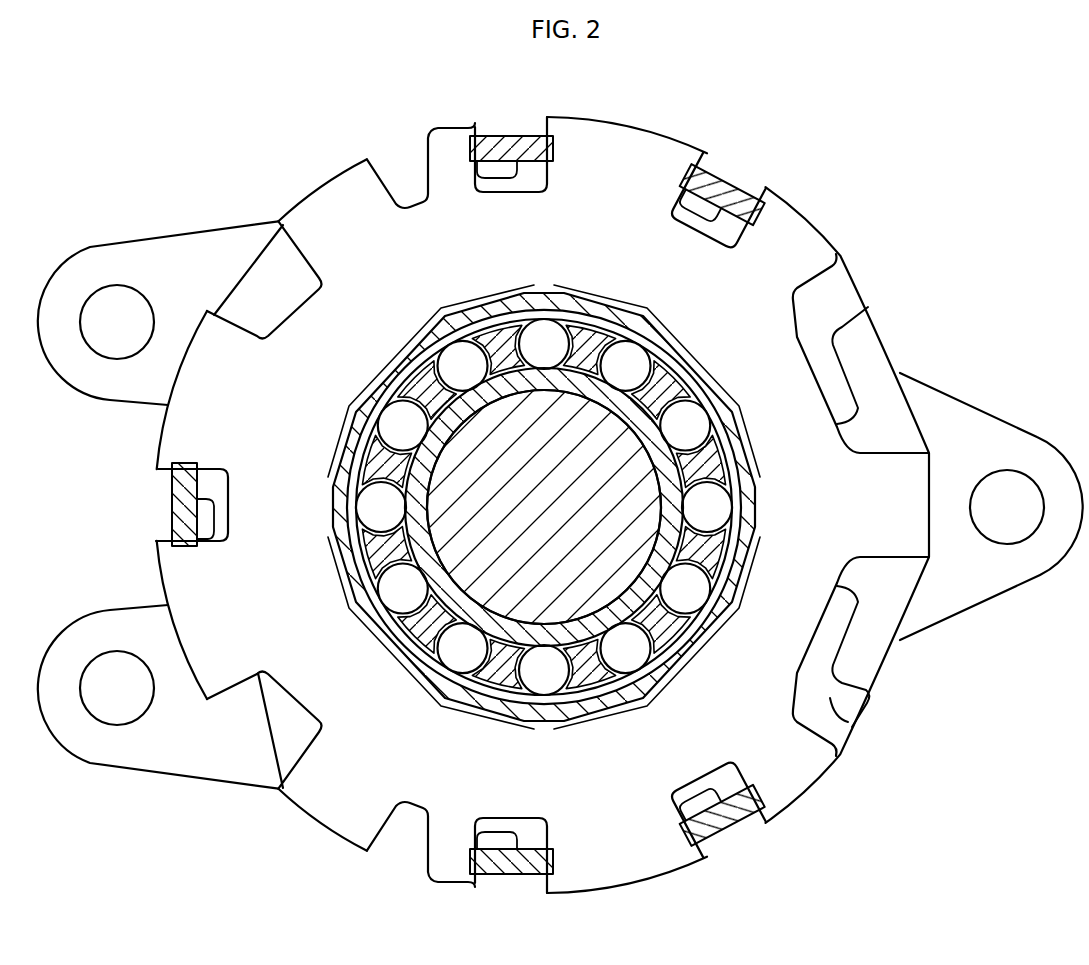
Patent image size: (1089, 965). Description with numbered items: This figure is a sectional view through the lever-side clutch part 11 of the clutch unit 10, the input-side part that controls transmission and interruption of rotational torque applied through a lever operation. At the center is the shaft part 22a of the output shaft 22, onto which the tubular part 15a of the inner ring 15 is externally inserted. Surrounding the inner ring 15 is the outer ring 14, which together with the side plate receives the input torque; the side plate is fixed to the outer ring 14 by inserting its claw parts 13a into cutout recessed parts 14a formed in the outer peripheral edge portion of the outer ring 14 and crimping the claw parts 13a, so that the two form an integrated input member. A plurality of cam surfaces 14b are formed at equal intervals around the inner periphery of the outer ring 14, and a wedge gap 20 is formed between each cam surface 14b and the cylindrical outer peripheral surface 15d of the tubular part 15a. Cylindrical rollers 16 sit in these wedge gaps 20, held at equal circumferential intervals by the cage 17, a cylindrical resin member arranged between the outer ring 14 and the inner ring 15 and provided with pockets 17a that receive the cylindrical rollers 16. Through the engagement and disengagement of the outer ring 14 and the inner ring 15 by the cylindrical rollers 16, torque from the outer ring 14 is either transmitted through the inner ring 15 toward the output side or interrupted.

The clutch unit 10 is at (885, 177).
The lever-side clutch part 11 is at (478, 120).
The claw parts 13a is at (527, 150).
The outer ring 14 is at (800, 335).
The cutout recessed parts 14a is at (500, 180).
The cam surfaces 14b is at (460, 655).
The inner ring 15 is at (450, 567).
The tubular part 15a is at (607, 400).
The cylindrical outer peripheral surface 15d is at (650, 459).
The cylindrical rollers 16 is at (780, 405).
The cage 17 is at (392, 549).
The pockets 17a is at (396, 418).
The wedge gap 20 is at (470, 330).
The output shaft 22 is at (637, 587).
The shaft part 22a is at (572, 580).